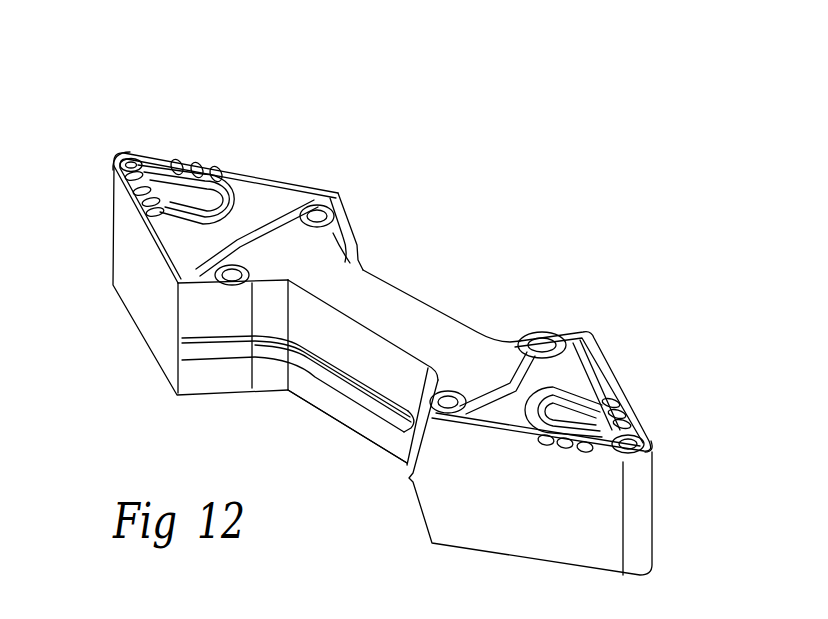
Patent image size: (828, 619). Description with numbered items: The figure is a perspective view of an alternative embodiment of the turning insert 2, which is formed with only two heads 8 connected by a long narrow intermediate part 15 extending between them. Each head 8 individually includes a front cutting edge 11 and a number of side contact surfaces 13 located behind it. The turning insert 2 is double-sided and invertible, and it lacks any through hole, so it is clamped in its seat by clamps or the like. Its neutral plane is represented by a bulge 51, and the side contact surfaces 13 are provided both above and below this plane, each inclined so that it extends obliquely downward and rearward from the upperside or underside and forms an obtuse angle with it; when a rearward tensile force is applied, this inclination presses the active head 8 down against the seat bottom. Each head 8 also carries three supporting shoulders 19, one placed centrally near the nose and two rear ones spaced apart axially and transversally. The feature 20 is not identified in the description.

The turning insert 2 is at (368, 488).
The head 8 is at (235, 137).
The front cutting edge 11 is at (122, 152).
The side contact surface 13 is at (340, 235).
The intermediate part 15 is at (380, 308).
The supporting shoulder 19 is at (537, 337).
The channel recess 20 is at (572, 406).
The bulge 51 is at (325, 385).